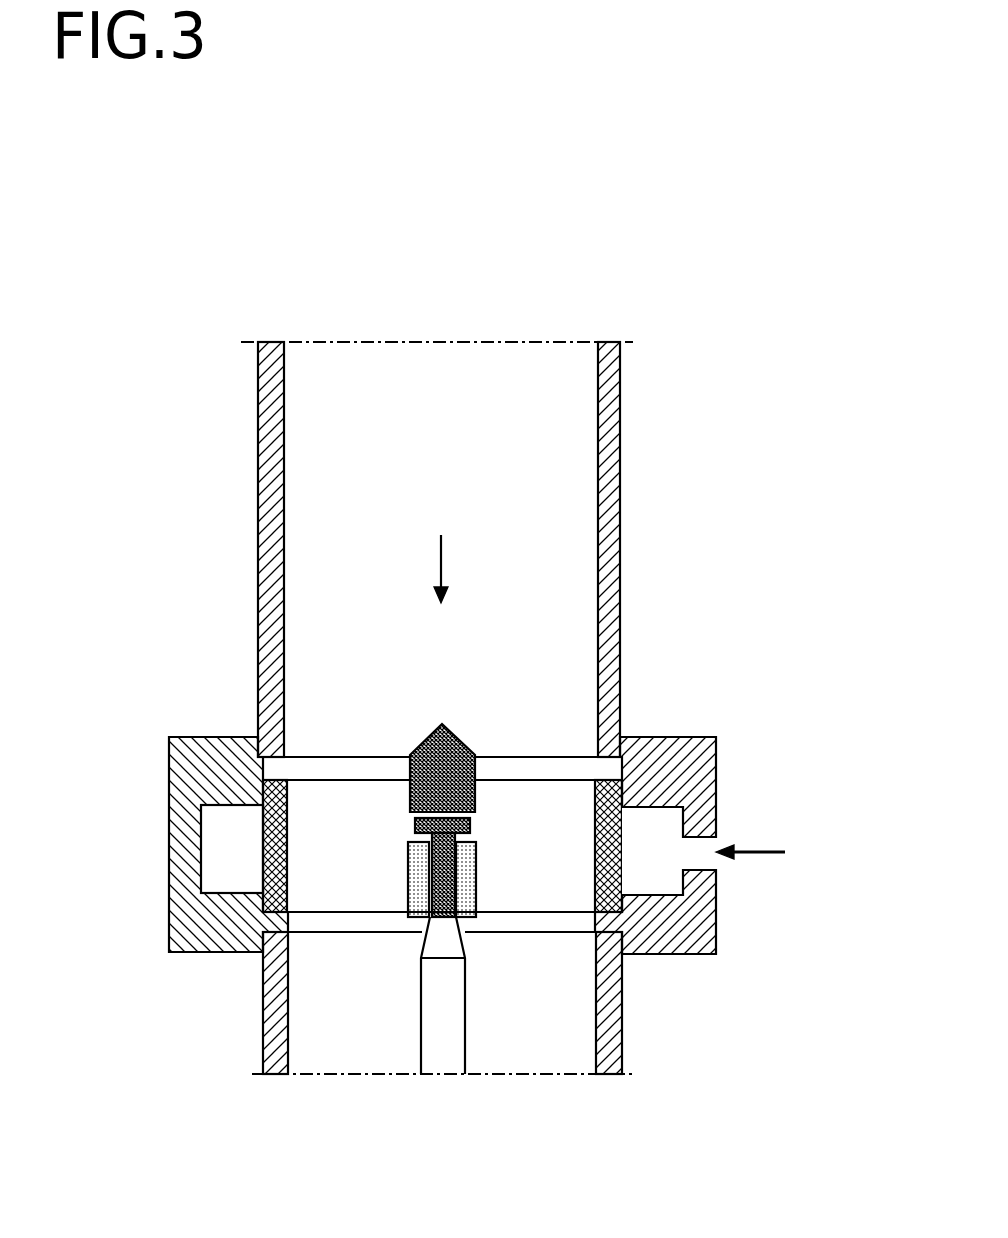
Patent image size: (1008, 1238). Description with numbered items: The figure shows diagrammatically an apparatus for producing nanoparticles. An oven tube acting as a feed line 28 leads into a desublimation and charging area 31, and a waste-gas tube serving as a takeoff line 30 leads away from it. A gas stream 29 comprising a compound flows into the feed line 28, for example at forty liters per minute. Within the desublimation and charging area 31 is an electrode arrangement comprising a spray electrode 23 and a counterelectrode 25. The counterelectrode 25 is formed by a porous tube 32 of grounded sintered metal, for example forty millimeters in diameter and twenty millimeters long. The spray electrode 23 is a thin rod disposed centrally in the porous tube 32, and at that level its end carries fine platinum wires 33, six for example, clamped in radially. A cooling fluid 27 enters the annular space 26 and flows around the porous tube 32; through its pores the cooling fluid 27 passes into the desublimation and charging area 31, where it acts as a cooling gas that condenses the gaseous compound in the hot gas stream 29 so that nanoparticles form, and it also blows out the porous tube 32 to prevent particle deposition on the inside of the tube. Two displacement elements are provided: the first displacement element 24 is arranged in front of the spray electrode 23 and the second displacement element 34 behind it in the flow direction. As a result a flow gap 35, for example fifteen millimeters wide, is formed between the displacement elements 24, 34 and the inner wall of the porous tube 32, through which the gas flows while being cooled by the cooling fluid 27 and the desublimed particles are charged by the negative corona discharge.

The spray electrode 23 is at (470, 832).
The first displacement element 24 is at (448, 736).
The counterelectrode 25 is at (734, 846).
The porous tube 32 is at (623, 857).
The annular space 26 is at (648, 820).
The cooling fluid 27 is at (769, 851).
The feed line 28 is at (610, 548).
The gas stream 29 is at (443, 535).
The takeoff line 30 is at (607, 1000).
The desublimation and charging area 31 is at (312, 883).
The platinum wires 33 is at (410, 826).
The second displacement element 34 is at (412, 908).
The flow gap 35 is at (308, 794).